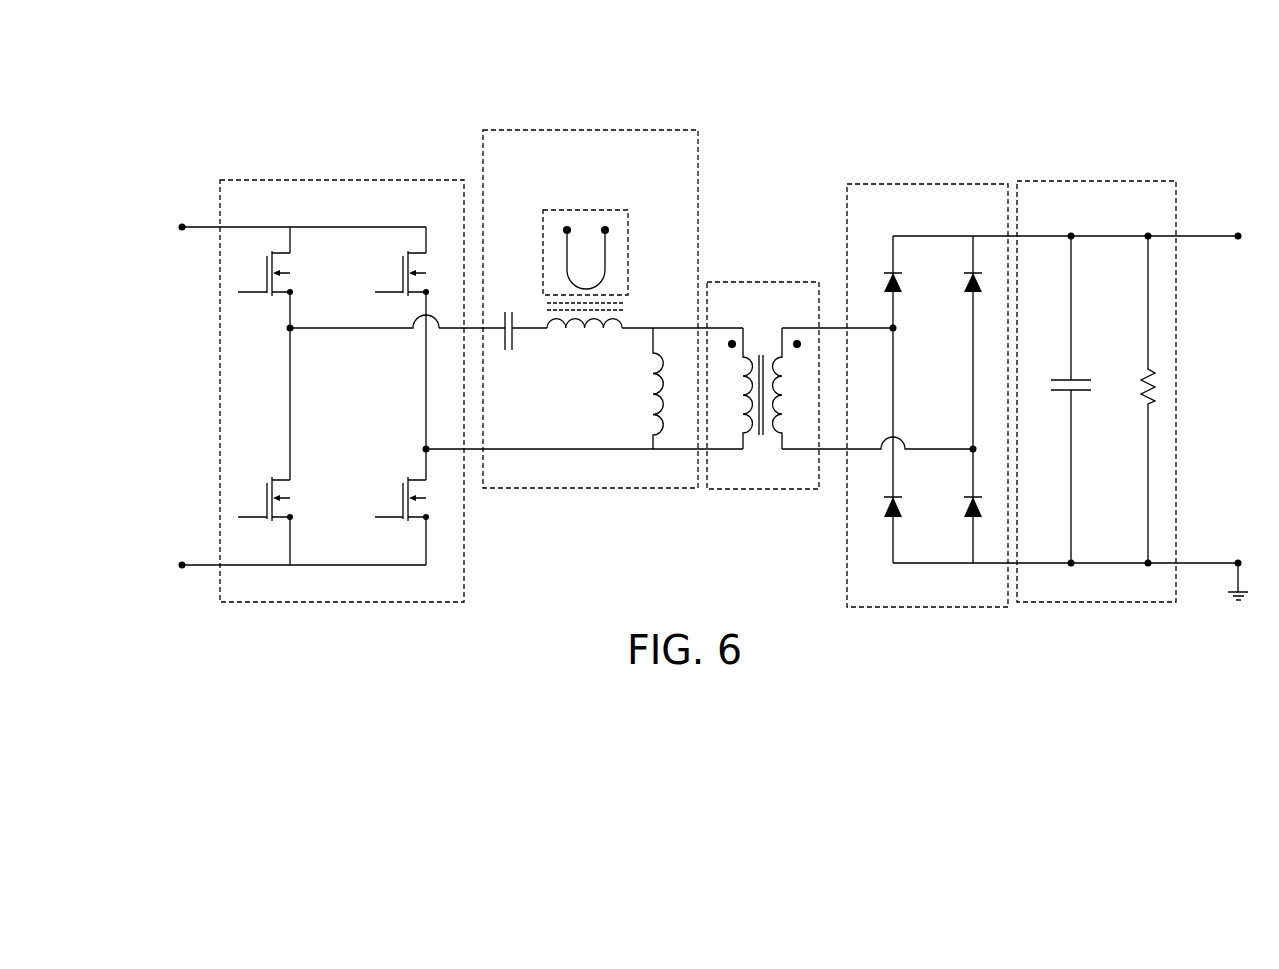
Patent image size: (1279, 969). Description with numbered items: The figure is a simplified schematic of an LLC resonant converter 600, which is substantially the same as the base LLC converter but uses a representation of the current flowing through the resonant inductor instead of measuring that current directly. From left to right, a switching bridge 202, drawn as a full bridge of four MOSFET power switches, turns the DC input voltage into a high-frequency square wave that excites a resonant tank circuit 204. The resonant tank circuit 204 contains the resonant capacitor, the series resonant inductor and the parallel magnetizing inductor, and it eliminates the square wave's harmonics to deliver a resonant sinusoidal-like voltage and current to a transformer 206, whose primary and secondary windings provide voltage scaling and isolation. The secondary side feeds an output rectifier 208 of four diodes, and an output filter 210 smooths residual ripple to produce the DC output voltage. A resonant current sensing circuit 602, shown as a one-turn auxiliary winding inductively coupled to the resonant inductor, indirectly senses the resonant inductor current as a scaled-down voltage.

The LLC resonant converter 600 is at (114, 72).
The switching bridge 202 is at (356, 180).
The resonant tank circuit 204 is at (547, 490).
The resonant current sensing circuit 602 is at (597, 209).
The transformer 206 is at (768, 282).
The output rectifier 208 is at (947, 184).
The output filter 210 is at (1115, 181).